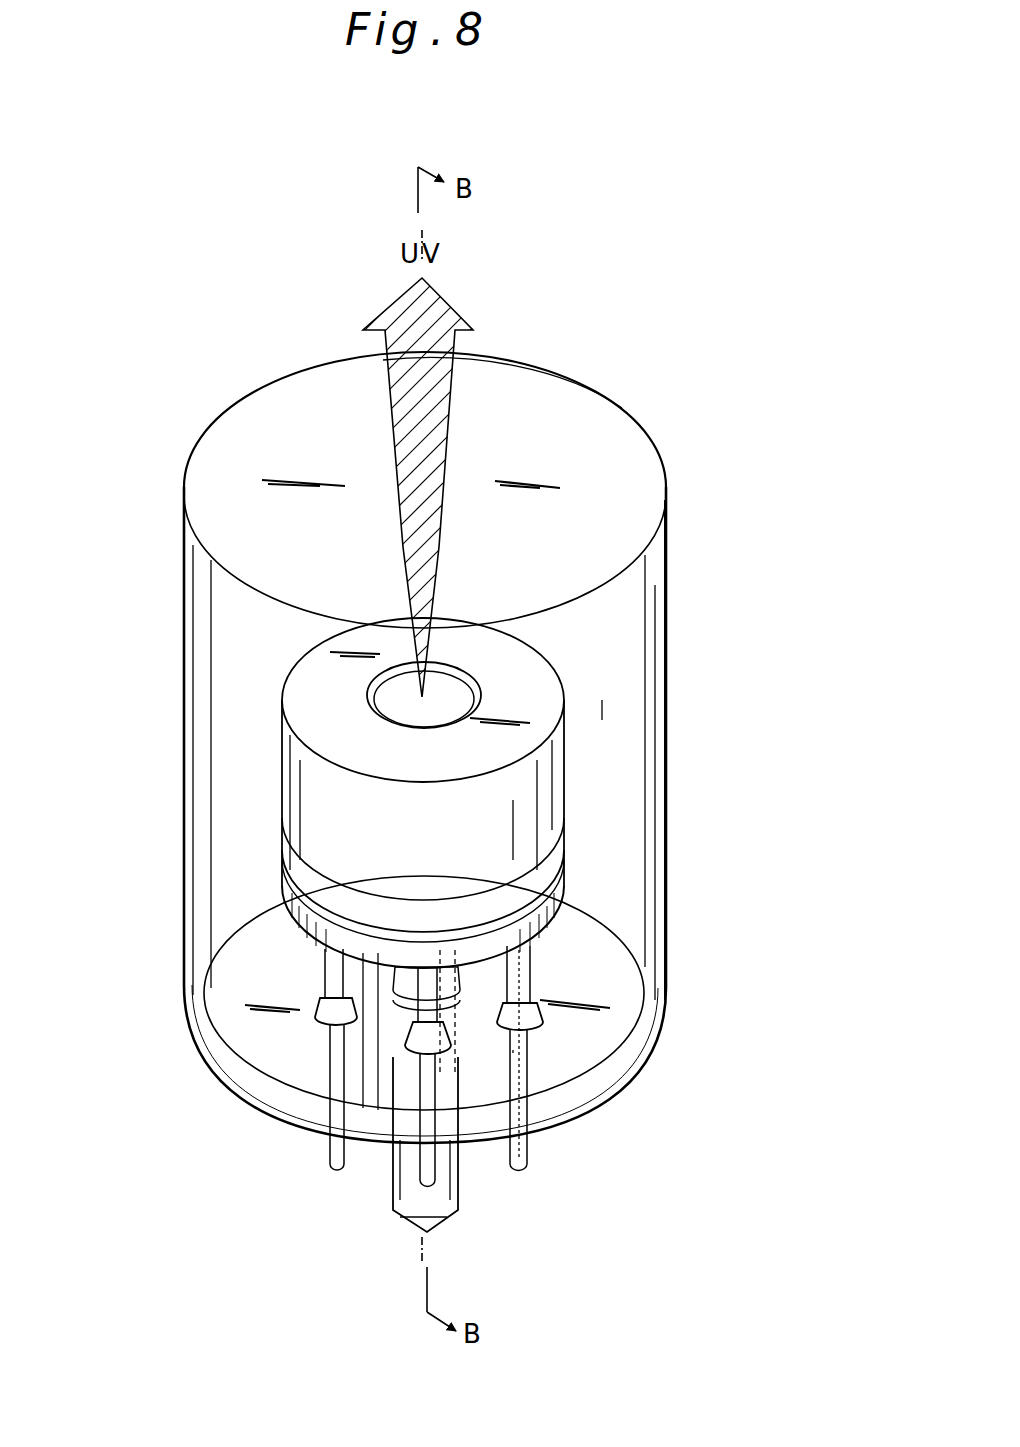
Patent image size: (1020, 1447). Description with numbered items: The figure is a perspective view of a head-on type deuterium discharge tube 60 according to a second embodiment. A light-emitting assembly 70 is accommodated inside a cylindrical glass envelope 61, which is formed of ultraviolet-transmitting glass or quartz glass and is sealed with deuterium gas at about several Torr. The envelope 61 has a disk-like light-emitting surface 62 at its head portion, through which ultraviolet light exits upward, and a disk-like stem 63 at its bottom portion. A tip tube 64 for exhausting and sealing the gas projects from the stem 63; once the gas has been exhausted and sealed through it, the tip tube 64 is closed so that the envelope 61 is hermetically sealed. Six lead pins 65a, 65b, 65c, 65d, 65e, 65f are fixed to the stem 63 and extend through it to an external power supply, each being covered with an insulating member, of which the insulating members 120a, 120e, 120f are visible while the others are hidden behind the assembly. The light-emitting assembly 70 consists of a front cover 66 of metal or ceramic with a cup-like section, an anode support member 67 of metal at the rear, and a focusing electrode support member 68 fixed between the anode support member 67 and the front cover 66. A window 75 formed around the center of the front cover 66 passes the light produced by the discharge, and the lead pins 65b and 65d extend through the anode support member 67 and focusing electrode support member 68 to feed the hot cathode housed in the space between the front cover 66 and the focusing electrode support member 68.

The deuterium discharge tube 60 is at (720, 476).
The cylindrical glass envelope 61 is at (647, 649).
The light-emitting surface 62 is at (622, 450).
The stem 63 is at (623, 1022).
The tip tube 64 is at (451, 1197).
The lead pin 65a is at (524, 1155).
The lead pin 65b is at (513, 1053).
The lead pin 65c is at (447, 1075).
The lead pin 65d is at (367, 1080).
The lead pin 65e is at (331, 1157).
The lead pin 65f is at (418, 1184).
The front cover 66 is at (547, 768).
The anode support member 67 is at (565, 903).
The focusing electrode support member 68 is at (553, 862).
The light-emitting assembly 70 is at (745, 722).
The window 75 is at (392, 702).
The insulating member 120a is at (530, 978).
The insulating member 120e is at (330, 970).
The insulating member 120f is at (417, 1013).